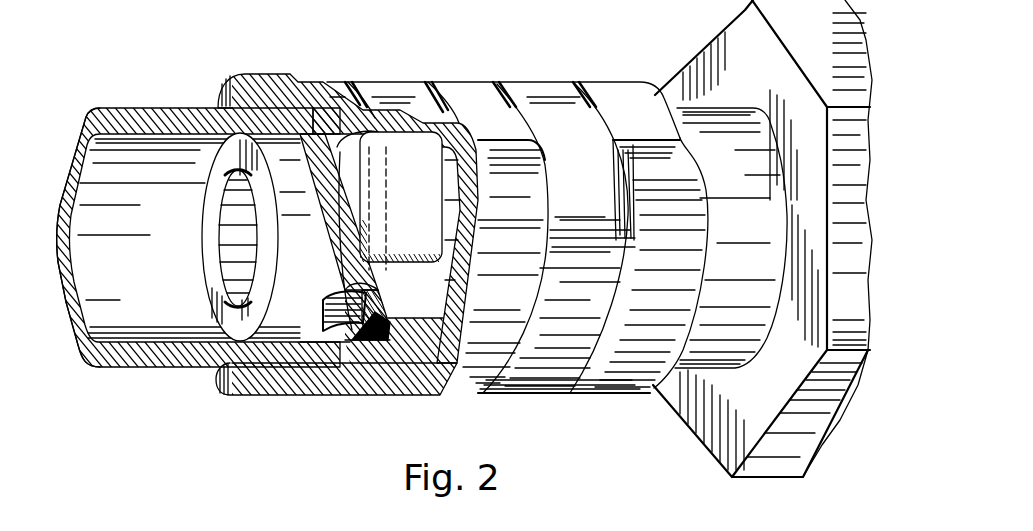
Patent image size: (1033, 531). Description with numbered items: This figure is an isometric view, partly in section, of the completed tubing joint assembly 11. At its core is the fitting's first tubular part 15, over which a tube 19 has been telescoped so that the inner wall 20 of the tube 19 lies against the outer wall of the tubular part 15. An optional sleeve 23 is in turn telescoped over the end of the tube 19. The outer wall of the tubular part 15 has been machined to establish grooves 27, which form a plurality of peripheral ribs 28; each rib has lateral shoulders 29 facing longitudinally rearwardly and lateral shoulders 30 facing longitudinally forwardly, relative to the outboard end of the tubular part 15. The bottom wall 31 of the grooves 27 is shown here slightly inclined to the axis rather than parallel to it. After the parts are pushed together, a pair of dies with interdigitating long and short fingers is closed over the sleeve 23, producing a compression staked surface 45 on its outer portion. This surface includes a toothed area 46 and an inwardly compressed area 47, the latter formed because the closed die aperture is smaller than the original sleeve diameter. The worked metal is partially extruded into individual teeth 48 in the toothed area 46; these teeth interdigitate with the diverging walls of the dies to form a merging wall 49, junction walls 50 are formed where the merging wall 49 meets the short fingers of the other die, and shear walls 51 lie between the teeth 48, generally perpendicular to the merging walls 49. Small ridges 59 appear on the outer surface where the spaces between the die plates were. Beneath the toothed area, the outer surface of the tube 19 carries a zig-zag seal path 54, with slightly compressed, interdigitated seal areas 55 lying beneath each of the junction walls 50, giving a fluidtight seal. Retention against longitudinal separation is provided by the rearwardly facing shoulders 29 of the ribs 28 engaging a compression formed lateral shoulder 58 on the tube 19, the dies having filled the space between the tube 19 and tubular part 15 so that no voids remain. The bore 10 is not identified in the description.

The bore 10 is at (228, 260).
The tubing joint assembly 11 is at (650, 53).
The first tubular part 15 is at (205, 192).
The tube 19 is at (110, 108).
The inner wall 20 is at (135, 338).
The sleeve 23 is at (612, 83).
The grooves 27 is at (334, 350).
The peripheral ribs 28 is at (365, 342).
The lateral shoulders 29 is at (343, 300).
The lateral shoulders 30 is at (344, 350).
The bottom wall 31 is at (312, 375).
The compression staked surface 45 is at (598, 168).
The toothed area 46 is at (652, 252).
The inwardly compressed area 47 is at (531, 83).
The individual teeth 48 is at (520, 167).
The merging wall 49 is at (693, 173).
The junction walls 50 is at (578, 260).
The shear walls 51 is at (621, 181).
The zig-zag seal path 54 is at (367, 206).
The seal areas 55 is at (322, 234).
The compression formed lateral shoulder 58 is at (57, 256).
The small ridges 59 is at (427, 103).